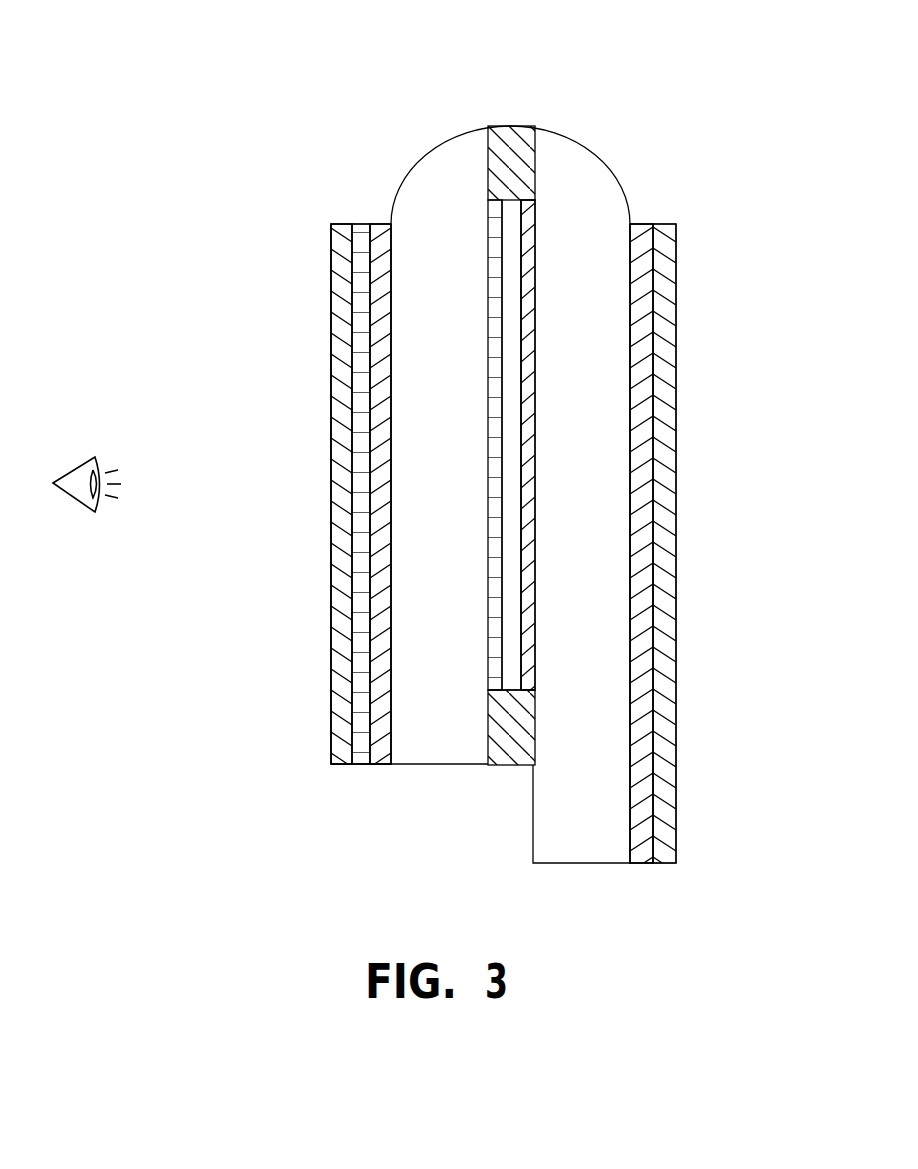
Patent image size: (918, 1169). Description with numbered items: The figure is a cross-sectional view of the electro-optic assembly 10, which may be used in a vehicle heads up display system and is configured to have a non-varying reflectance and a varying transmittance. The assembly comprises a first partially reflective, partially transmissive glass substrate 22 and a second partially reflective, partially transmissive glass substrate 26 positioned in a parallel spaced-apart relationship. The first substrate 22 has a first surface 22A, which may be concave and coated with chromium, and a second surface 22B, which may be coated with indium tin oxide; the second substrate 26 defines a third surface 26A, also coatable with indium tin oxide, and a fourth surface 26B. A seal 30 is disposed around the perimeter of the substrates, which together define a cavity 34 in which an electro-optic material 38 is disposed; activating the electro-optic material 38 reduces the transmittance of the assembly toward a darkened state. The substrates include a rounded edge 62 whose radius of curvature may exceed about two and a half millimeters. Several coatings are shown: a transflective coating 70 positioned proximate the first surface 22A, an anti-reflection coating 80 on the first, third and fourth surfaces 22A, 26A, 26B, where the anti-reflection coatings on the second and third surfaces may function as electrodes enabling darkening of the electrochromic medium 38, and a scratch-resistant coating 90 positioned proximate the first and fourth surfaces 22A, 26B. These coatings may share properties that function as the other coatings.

The electro-optic assembly 10 is at (692, 76).
The first glass substrate 22 is at (415, 380).
The first surface 22A is at (380, 500).
The second surface 22B is at (490, 613).
The second glass substrate 26 is at (608, 327).
The third surface 26A is at (535, 535).
The fourth surface 26B is at (633, 722).
The seal 30 is at (512, 128).
The cavity 34 is at (514, 452).
The electro-optic material 38 is at (512, 657).
The rounded edge 62 is at (469, 127).
The transflective coating 70 is at (492, 340).
The anti-reflection coating 80 is at (380, 242).
The scratch-resistant coating 90 is at (345, 245).